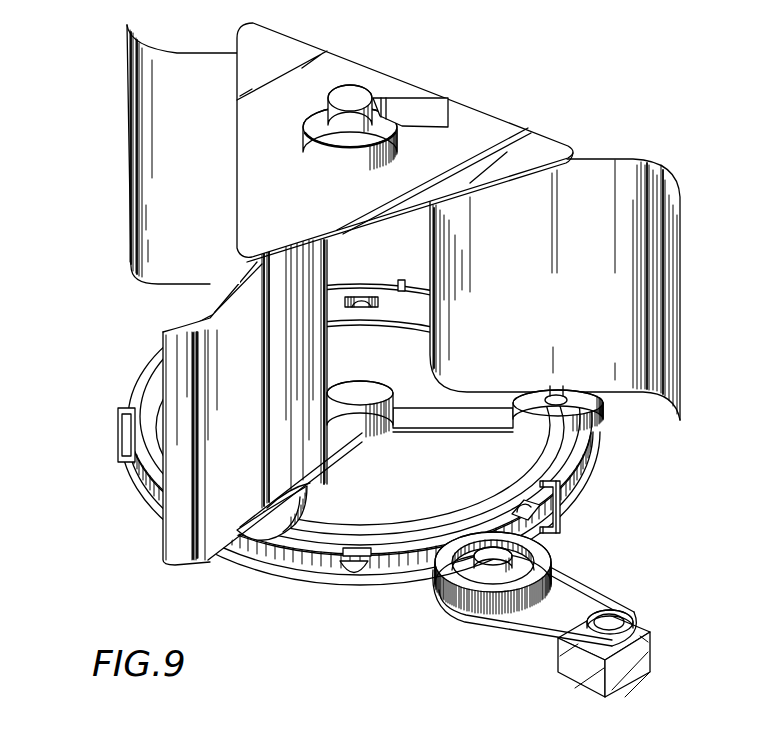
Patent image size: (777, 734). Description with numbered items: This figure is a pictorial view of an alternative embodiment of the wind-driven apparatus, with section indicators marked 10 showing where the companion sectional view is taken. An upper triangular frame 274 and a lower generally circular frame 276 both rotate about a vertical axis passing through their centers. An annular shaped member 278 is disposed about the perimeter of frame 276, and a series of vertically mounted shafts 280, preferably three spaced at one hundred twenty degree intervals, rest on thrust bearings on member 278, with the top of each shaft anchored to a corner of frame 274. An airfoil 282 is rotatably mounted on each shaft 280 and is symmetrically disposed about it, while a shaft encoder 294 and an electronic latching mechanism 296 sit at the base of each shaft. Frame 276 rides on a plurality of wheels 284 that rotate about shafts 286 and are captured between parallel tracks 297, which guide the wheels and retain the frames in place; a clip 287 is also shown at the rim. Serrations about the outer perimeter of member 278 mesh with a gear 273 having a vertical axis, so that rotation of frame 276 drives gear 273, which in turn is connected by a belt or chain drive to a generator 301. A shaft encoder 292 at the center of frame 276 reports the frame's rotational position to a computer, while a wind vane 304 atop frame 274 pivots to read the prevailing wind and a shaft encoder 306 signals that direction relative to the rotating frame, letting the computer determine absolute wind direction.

The wind vane 304 is at (397, 100).
The shaft encoder 306 is at (325, 165).
The upper triangular frame 274 is at (296, 218).
The airfoil 282 is at (522, 338).
The shaft encoder 292 is at (351, 395).
The lower generally circular frame 276 is at (457, 432).
The parallel tracks 297 is at (148, 397).
The retaining clip 287 is at (118, 435).
The vertically mounted shaft 280 is at (580, 394).
The shaft encoder 294 is at (590, 421).
The electronic latching mechanism 296 is at (588, 442).
The annular shaped member 278 is at (567, 470).
The wheel shaft 286 is at (560, 532).
The gear 273 is at (545, 562).
The generator 301 is at (652, 656).
The wheel 284 is at (353, 570).
The section line 10- 10 is at (366, 497).